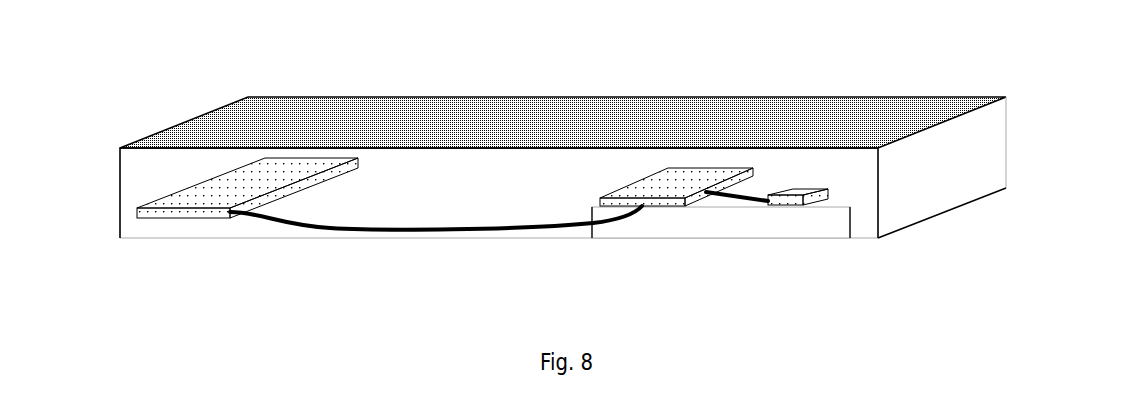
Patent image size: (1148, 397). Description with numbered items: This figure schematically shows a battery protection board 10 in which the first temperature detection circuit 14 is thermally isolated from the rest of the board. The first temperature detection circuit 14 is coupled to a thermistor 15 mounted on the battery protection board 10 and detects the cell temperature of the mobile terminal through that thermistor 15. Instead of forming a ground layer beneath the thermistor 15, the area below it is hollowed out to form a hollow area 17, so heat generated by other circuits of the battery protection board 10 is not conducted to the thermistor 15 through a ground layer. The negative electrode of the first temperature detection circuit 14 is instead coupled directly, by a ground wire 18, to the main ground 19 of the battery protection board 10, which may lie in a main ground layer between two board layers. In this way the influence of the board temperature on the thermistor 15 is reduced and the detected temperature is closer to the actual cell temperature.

The battery protection board 10 is at (948, 88).
The first temperature detection circuit 14 is at (695, 165).
The thermistor 15 is at (800, 188).
The hollow area 17 is at (755, 238).
The ground wire 18 is at (412, 230).
The main ground 19 is at (280, 157).